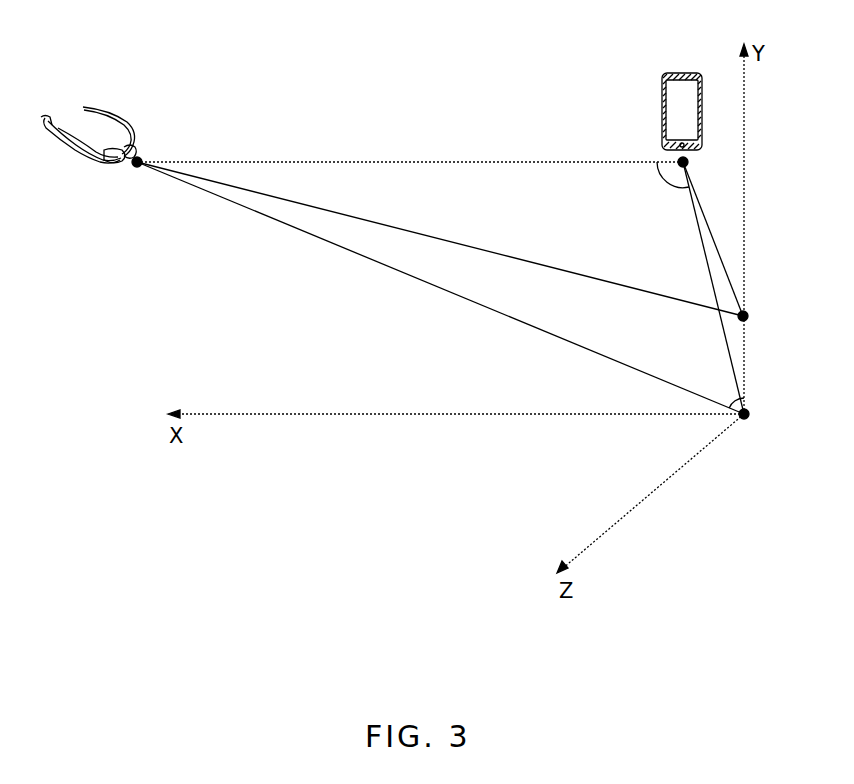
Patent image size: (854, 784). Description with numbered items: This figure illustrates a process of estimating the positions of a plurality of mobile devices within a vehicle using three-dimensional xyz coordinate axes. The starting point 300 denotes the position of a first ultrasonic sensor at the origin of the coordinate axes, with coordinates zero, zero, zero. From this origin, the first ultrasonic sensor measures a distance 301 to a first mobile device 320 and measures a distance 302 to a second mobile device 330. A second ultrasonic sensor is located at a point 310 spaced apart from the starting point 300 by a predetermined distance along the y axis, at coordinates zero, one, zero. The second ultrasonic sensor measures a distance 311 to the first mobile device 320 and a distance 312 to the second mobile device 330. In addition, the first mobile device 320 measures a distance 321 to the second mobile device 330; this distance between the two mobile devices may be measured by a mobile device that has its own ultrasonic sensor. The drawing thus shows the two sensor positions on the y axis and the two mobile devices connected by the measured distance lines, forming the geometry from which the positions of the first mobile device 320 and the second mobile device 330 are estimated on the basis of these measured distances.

The starting point 300 is at (746, 420).
The distance 301 is at (702, 243).
The distance 302 is at (440, 290).
The point 310 is at (749, 316).
The distance 311 is at (702, 210).
The distance 312 is at (540, 262).
The first mobile device 320 is at (681, 73).
The distance 321 is at (265, 160).
The second mobile device 330 is at (83, 107).